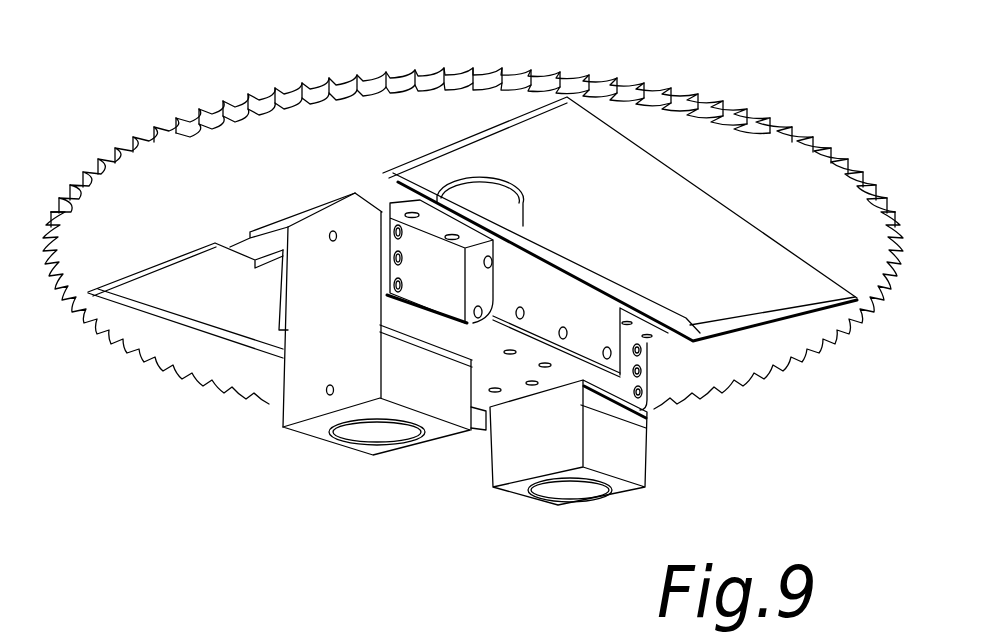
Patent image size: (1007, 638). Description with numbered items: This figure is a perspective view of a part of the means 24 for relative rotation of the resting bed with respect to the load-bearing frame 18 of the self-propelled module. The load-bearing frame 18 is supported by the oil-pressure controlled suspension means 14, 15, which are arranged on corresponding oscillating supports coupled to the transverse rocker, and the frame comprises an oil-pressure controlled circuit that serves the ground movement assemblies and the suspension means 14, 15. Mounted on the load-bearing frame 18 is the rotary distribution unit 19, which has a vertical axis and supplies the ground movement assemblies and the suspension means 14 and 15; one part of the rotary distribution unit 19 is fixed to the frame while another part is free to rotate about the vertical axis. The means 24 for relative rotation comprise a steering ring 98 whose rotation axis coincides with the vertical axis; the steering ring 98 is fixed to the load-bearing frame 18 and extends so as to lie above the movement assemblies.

The oil-pressure controlled suspension means 14 is at (293, 375).
The oil-pressure controlled suspension means 15 is at (640, 453).
The load-bearing frame 18 is at (532, 350).
The rotary distribution unit 19 is at (537, 207).
The means for relative rotation 24 is at (802, 104).
The steering ring 98 is at (183, 163).